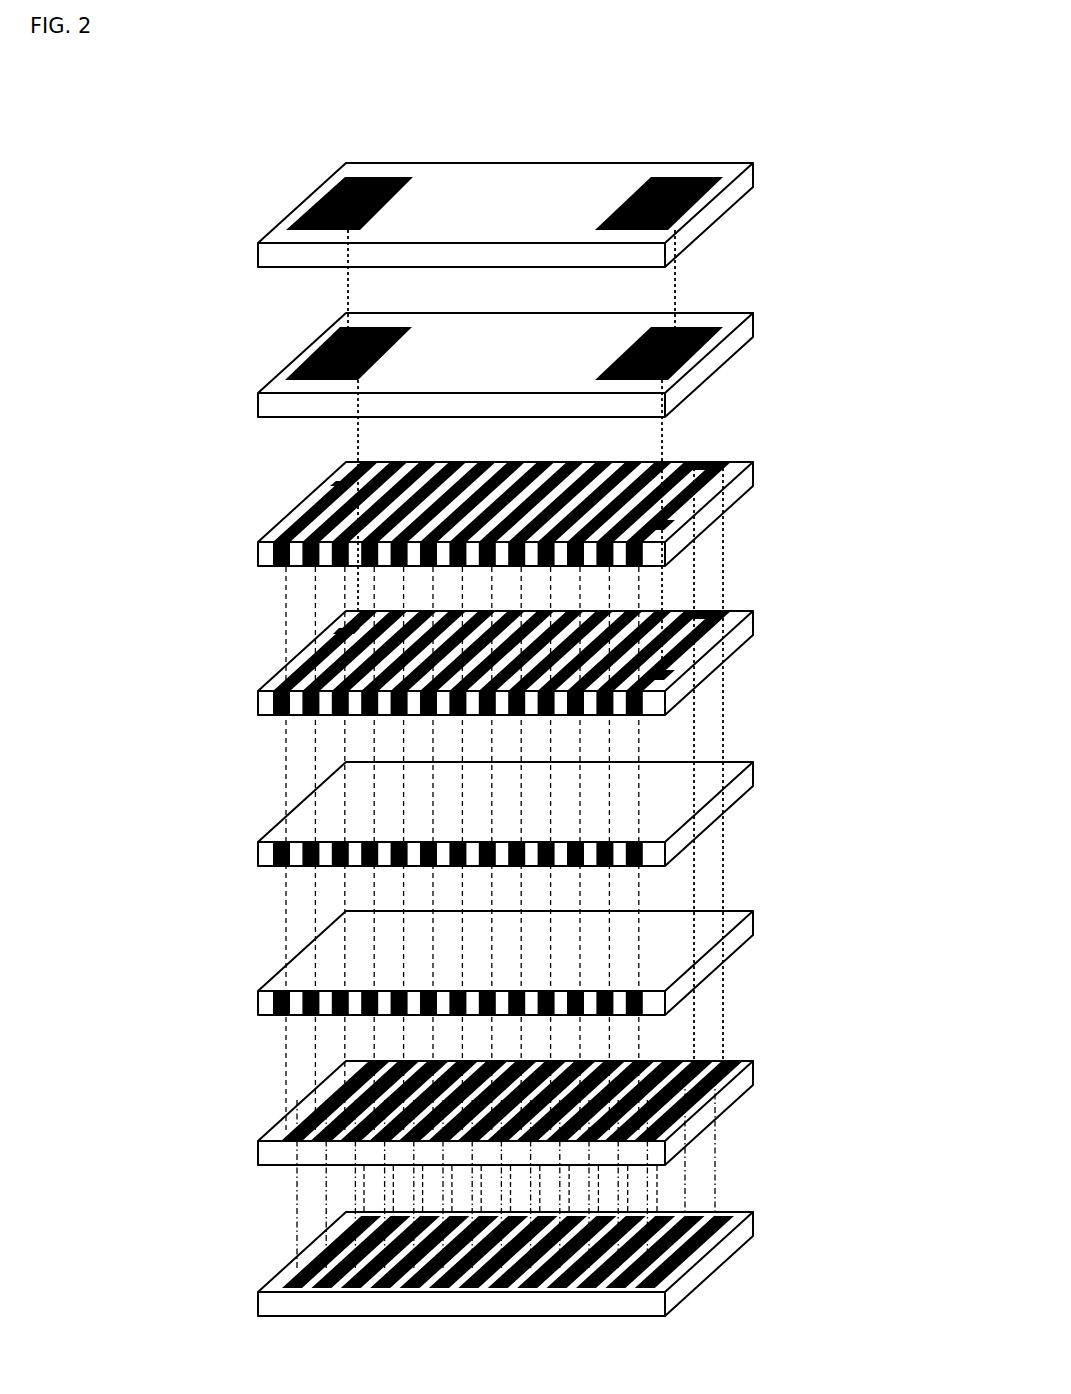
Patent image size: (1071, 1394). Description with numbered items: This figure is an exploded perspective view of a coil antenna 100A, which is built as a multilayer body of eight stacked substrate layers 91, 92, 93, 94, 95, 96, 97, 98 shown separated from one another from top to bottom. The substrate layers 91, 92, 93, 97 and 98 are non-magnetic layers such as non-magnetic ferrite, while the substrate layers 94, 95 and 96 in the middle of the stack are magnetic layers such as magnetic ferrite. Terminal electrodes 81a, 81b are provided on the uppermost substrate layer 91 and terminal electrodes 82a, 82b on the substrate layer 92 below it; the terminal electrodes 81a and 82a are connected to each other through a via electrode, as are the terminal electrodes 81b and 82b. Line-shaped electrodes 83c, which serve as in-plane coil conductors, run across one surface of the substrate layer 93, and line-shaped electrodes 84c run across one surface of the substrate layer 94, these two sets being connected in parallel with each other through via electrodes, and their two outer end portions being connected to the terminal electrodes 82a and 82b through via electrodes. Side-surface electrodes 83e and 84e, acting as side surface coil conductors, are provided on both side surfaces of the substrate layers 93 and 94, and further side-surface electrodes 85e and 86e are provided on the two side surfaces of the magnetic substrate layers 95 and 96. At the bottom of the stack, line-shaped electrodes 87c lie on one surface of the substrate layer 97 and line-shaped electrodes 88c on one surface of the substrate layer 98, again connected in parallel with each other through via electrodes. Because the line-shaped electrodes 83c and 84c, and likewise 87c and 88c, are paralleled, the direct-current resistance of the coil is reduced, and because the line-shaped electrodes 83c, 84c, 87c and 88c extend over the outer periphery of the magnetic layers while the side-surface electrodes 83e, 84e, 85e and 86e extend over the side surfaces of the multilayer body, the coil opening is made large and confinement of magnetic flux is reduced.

The coil antenna 100A is at (785, 113).
The terminal electrode 81a is at (317, 201).
The terminal electrode 81b is at (703, 200).
The terminal electrode 82a is at (317, 349).
The terminal electrode 82b is at (703, 350).
The line-shaped electrodes 83c is at (330, 505).
The side-surface electrodes 83e is at (278, 553).
The line-shaped electrodes 84c is at (330, 654).
The side-surface electrodes 84e is at (278, 702).
The side-surface electrodes 85e is at (278, 852).
The side-surface electrodes 86e is at (278, 1002).
The line-shaped electrodes 87c is at (313, 1112).
The line-shaped electrodes 88c is at (313, 1262).
The substrate layer 91 is at (258, 244).
The substrate layer 92 is at (258, 393).
The substrate layer 93 is at (258, 542).
The substrate layer 94 is at (258, 691).
The substrate layer 95 is at (258, 842).
The substrate layer 96 is at (258, 991).
The substrate layer 97 is at (258, 1141).
The substrate layer 98 is at (258, 1292).